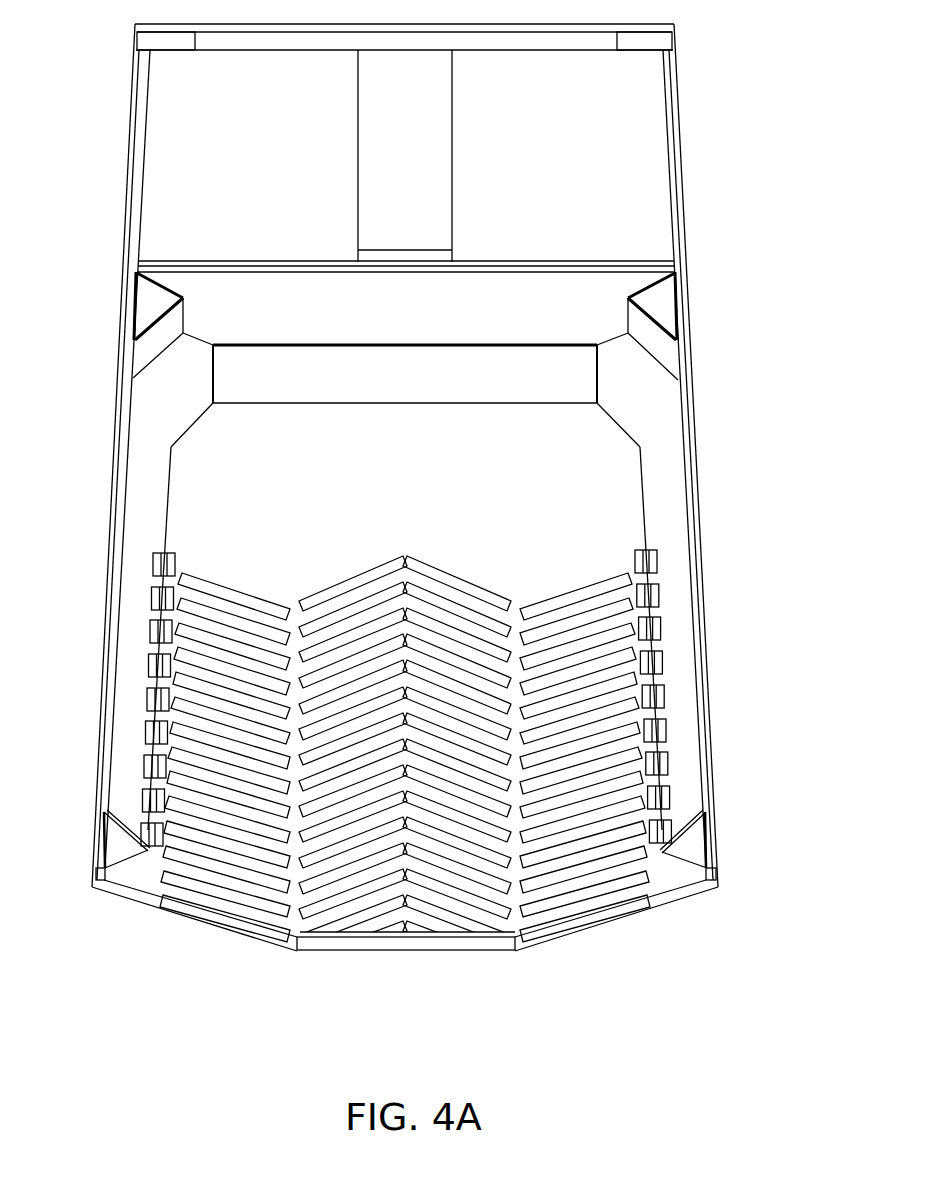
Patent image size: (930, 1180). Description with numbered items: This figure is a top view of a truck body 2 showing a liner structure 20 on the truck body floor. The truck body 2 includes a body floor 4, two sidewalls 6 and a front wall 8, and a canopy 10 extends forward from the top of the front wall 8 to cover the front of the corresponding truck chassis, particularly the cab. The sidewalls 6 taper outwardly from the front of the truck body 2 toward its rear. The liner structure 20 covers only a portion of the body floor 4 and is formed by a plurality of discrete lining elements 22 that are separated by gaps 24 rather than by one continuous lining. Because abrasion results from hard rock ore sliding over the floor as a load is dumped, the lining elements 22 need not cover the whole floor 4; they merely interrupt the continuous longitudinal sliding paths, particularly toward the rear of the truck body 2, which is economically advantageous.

The truck body 2 is at (718, 727).
The body floor 4 is at (218, 455).
The sidewalls 6 is at (148, 478).
The front wall 8 is at (597, 296).
The canopy 10 is at (613, 173).
The liner structure 20 is at (612, 570).
The lining elements 22 is at (242, 598).
The gaps 24 is at (496, 610).